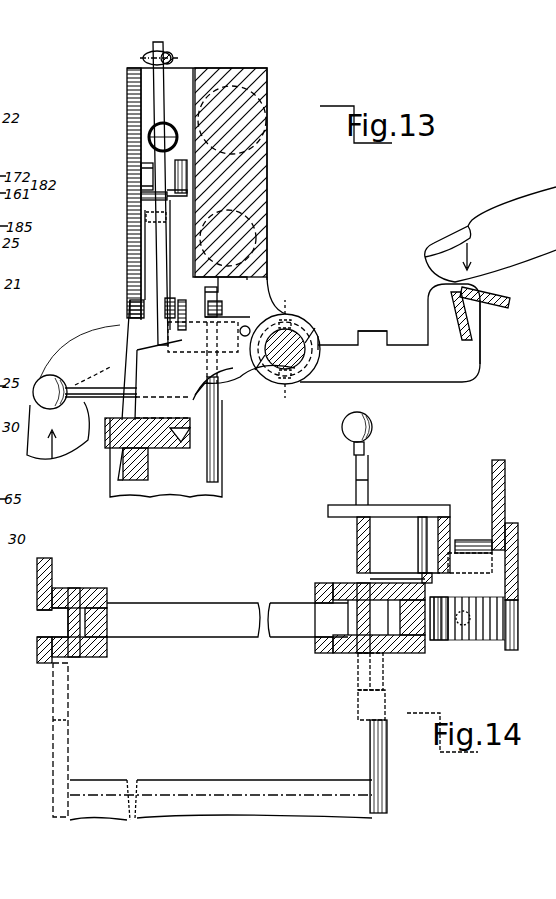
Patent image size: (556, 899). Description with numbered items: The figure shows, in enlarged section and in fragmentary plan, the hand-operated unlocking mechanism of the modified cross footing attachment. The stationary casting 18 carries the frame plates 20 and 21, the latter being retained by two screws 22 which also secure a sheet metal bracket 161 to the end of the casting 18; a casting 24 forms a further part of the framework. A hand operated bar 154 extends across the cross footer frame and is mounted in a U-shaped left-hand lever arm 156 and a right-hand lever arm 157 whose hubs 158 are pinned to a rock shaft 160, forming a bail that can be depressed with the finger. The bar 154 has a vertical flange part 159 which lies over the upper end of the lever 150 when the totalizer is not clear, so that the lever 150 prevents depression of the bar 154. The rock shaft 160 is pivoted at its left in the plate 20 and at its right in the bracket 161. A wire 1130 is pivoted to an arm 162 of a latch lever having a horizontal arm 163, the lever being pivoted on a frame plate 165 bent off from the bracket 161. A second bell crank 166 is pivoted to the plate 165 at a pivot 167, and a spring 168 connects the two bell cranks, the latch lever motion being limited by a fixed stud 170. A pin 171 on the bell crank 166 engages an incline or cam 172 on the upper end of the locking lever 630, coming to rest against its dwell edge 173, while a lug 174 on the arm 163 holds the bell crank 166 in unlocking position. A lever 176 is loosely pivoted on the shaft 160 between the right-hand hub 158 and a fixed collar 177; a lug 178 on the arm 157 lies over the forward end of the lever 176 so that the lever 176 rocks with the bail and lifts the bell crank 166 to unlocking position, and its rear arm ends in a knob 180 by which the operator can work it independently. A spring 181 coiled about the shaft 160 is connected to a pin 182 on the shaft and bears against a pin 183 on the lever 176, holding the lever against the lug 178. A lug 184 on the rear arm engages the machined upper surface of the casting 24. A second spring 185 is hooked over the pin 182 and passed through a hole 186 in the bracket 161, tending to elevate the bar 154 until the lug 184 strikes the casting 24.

In FIG. 13, the casting 18 is at (268, 178).
In FIG. 14, the plate 20 is at (38, 652).
In FIG. 13, the plate 21 is at (185, 494).
In FIG. 14, the plate 21 is at (505, 494).
In FIG. 13, the screws 22 is at (269, 95).
In FIG. 13, the casting 24 is at (127, 472).
In FIG. 14, the lever 150 is at (227, 629).
In FIG. 13, the hand operated bar 154 is at (502, 307).
In FIG. 14, the hand operated bar 154 is at (221, 790).
In FIG. 14, the left-hand lever arm 156 is at (68, 733).
In FIG. 13, the right-hand lever arm 157 is at (476, 374).
In FIG. 14, the right-hand lever arm 157 is at (370, 757).
In FIG. 14, the hubs 158 is at (96, 590).
In FIG. 13, the vertical flange part 159 is at (462, 340).
In FIG. 13, the rock shaft 160 is at (272, 370).
In FIG. 13, the bracket 161 is at (272, 298).
In FIG. 14, the bracket 161 is at (518, 578).
In FIG. 13, the arm 162 is at (163, 84).
In FIG. 13, the horizontal arm 163 is at (145, 197).
In FIG. 13, the frame plate 165 is at (127, 106).
In FIG. 13, the bell crank 166 is at (168, 262).
In FIG. 14, the bell crank 166 is at (412, 504).
In FIG. 13, the pivot 167 is at (217, 298).
In FIG. 13, the spring 168 is at (150, 140).
In FIG. 13, the fixed stud 170 is at (157, 217).
In FIG. 14, the fixed stud 170 is at (358, 677).
In FIG. 13, the pin 171 is at (193, 368).
In FIG. 14, the pin 171 is at (418, 541).
In FIG. 13, the incline or cam 172 is at (222, 308).
In FIG. 14, the incline or cam 172 is at (484, 553).
In FIG. 13, the dwell edge 173 is at (210, 338).
In FIG. 13, the lug 174 is at (147, 175).
In FIG. 13, the lever 176 is at (155, 345).
In FIG. 14, the lever 176 is at (357, 544).
In FIG. 13, the fixed collar 177 is at (302, 323).
In FIG. 14, the fixed collar 177 is at (322, 653).
In FIG. 13, the lug 178 is at (372, 333).
In FIG. 14, the lug 178 is at (358, 711).
In FIG. 13, the knob 180 is at (55, 380).
In FIG. 14, the knob 180 is at (372, 432).
In FIG. 13, the spring 181 is at (250, 378).
In FIG. 14, the spring 181 is at (438, 641).
In FIG. 13, the pin 182 is at (291, 358).
In FIG. 14, the pin 182 is at (464, 626).
In FIG. 13, the pin 183 is at (244, 337).
In FIG. 14, the pin 183 is at (392, 573).
In FIG. 13, the lug 184 is at (155, 428).
In FIG. 14, the spring 185 is at (490, 642).
In FIG. 13, the hole 186 is at (321, 334).
In FIG. 14, the hole 186 is at (510, 651).
In FIG. 13, the locking lever 630 is at (218, 450).
In FIG. 14, the locking lever 630 is at (473, 537).
In FIG. 13, the wire 1130 is at (173, 54).